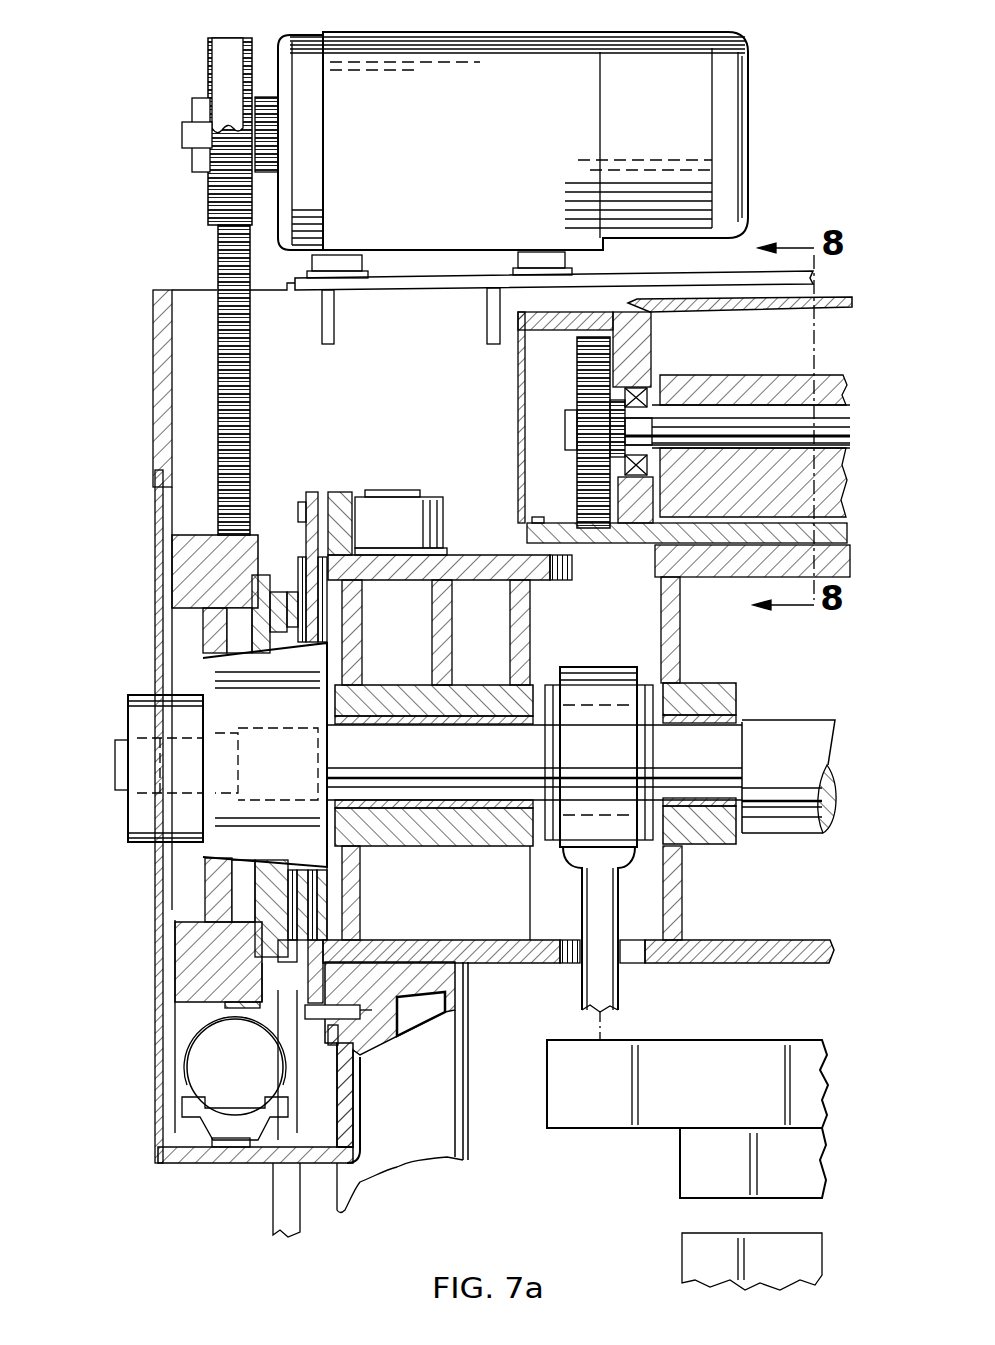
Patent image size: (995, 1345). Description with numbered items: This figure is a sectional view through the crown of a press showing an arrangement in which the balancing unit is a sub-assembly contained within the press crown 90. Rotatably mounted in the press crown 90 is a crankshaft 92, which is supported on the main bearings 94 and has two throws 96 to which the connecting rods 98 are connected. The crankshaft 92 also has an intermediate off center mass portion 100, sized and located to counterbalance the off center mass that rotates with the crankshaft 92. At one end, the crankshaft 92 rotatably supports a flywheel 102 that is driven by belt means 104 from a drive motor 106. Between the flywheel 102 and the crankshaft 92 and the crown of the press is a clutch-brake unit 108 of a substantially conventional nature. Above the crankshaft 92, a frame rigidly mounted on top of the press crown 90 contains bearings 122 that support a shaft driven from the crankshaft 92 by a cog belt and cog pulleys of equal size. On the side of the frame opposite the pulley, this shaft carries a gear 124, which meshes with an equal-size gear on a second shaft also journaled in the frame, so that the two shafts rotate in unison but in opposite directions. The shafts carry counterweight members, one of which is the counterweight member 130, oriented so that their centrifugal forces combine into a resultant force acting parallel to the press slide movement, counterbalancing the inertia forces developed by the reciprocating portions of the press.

The press crown 90 is at (759, 963).
The crankshaft 92 is at (116, 768).
The main bearings 94 is at (452, 846).
The throws 96 is at (595, 723).
The connecting rods 98 is at (583, 987).
The intermediate off center mass portion 100 is at (795, 732).
The flywheel 102 is at (175, 1000).
The belt means 104 is at (222, 258).
The drive motor 106 is at (737, 157).
The clutch-brake unit 108 is at (281, 508).
The bearings 122 is at (640, 392).
The gear 124 is at (575, 368).
The counterweight member 130 is at (821, 380).